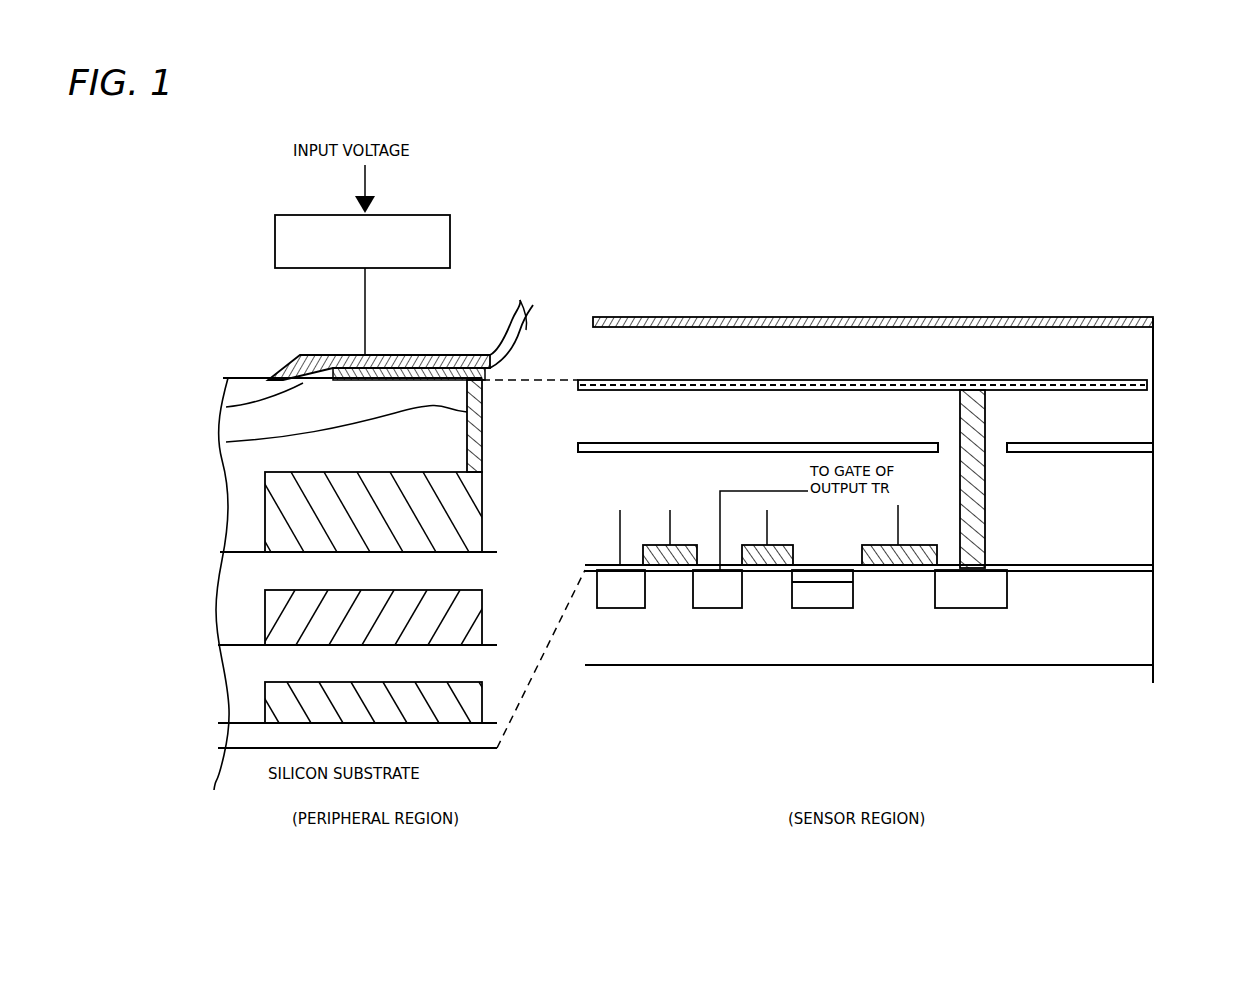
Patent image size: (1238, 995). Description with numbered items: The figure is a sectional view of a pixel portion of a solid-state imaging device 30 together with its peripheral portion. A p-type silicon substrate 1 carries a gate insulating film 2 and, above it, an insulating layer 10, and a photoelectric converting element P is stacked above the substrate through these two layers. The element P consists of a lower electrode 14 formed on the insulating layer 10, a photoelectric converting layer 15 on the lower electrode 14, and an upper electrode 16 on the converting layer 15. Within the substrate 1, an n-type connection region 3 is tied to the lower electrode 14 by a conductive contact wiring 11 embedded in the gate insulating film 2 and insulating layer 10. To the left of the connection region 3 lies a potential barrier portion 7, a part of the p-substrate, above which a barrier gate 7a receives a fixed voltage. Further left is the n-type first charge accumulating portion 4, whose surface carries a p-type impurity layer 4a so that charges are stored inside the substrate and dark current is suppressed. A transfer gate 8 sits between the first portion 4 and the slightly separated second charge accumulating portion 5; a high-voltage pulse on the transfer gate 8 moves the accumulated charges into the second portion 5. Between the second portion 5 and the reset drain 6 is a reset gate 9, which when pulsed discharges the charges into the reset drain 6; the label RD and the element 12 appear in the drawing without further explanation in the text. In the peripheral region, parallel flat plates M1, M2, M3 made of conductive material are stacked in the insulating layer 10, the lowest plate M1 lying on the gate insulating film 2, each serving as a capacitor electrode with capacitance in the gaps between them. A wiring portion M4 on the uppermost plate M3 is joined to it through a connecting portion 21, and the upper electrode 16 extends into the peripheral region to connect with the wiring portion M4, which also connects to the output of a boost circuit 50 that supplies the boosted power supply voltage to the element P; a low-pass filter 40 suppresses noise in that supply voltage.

The p-type silicon substrate 1 is at (1143, 618).
The gate insulating film 2 is at (230, 730).
The connection region 3 is at (966, 609).
The first charge accumulating portion 4 is at (823, 609).
The p-type impurity layer 4a is at (830, 578).
The second charge accumulating portion 5 is at (718, 609).
The reset drain 6 is at (621, 609).
The potential barrier portion 7 is at (905, 585).
The barrier gate 7a is at (922, 545).
The transfer gate 8 is at (782, 545).
The reset gate 9 is at (685, 545).
The insulating layer 10 is at (1133, 514).
The contact wiring 11 is at (972, 491).
The wiring layer 12 is at (1045, 453).
The lower electrode 14 is at (885, 391).
The photoelectric converting layer 15 is at (1073, 357).
The upper electrode 16 is at (305, 356).
The connecting portion 21 is at (226, 442).
The solid-state imaging device 30 is at (746, 240).
The low-pass filter 40 is at (222, 342).
The boost circuit 50 is at (450, 228).
The parallel flat plate M1 is at (265, 695).
The parallel flat plate M2 is at (265, 615).
The parallel flat plate M3 is at (265, 500).
The wiring portion M4 is at (226, 407).
The photoelectric converting element P is at (936, 292).
The reset drain terminal RD is at (619, 528).